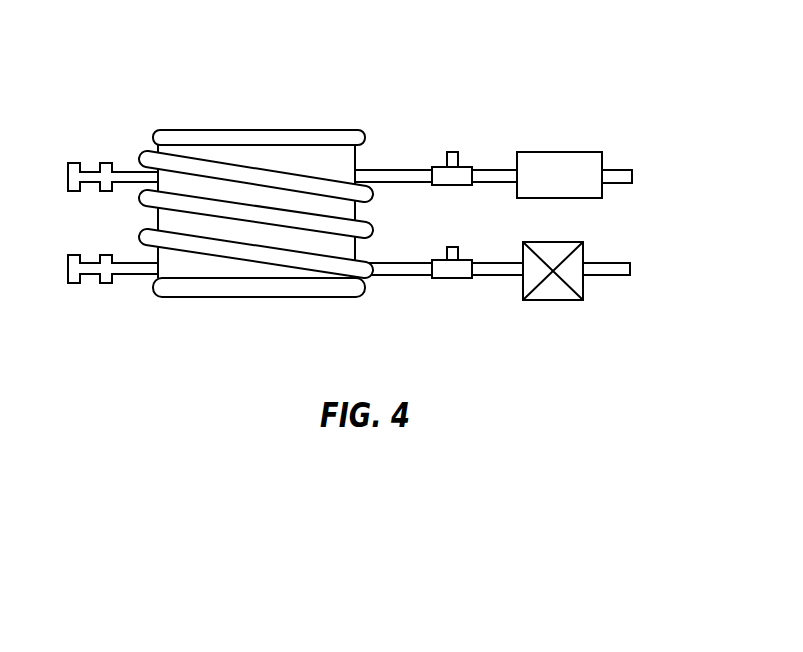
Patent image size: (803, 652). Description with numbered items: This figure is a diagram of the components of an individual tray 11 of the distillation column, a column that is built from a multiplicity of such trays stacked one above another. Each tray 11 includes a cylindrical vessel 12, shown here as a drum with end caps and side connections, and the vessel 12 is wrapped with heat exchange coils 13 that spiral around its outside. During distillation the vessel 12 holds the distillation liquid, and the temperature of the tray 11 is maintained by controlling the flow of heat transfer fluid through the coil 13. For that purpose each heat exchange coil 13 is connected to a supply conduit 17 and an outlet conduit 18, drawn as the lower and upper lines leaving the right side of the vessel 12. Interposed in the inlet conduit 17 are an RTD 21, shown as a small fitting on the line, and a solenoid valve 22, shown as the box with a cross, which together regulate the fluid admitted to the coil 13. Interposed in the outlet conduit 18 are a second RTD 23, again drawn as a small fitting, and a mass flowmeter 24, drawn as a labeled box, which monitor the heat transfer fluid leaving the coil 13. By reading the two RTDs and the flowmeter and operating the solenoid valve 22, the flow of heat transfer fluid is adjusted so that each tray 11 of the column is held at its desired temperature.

The tray 11 is at (288, 42).
The cylindrical vessel 12 is at (343, 165).
The heat exchange coils 13 is at (188, 158).
The supply conduit 17 is at (632, 270).
The outlet conduit 18 is at (618, 164).
The RTD 21 is at (448, 278).
The solenoid valve 22 is at (583, 285).
The second RTD 23 is at (460, 164).
The mass flowmeter 24 is at (577, 189).